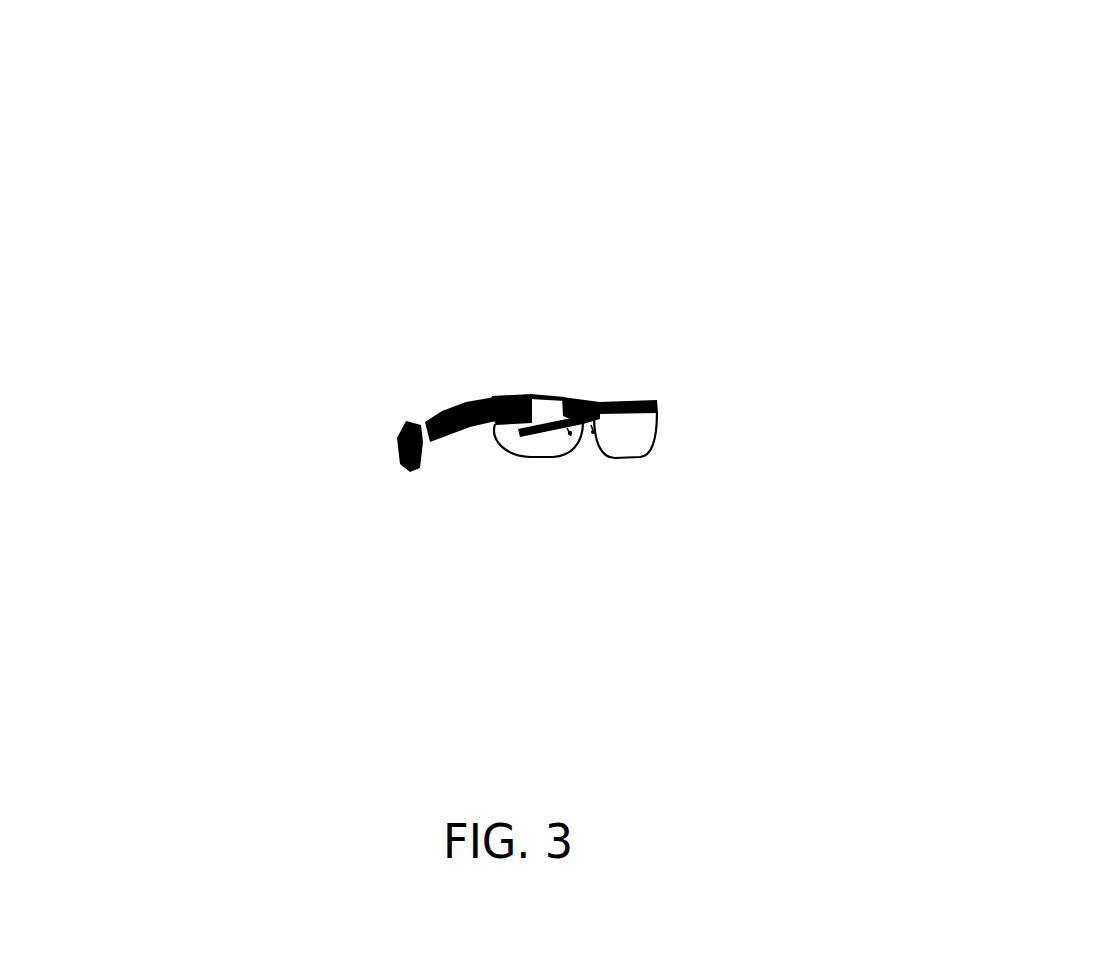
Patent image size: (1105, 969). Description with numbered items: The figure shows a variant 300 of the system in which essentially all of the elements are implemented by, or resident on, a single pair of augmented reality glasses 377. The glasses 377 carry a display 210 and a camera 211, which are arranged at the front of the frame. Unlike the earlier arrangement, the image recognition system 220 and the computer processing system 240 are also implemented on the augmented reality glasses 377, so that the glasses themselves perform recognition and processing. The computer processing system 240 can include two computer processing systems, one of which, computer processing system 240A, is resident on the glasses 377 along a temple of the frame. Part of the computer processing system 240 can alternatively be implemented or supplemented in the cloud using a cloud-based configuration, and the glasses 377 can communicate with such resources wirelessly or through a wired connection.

The variant 300 is at (675, 295).
The augmented reality glasses 377 is at (618, 341).
The display 210 is at (540, 384).
The camera 211 is at (500, 386).
The computer processing system 240 is at (332, 390).
The computer processing system 240A is at (407, 488).
The image recognition system 220 is at (322, 443).